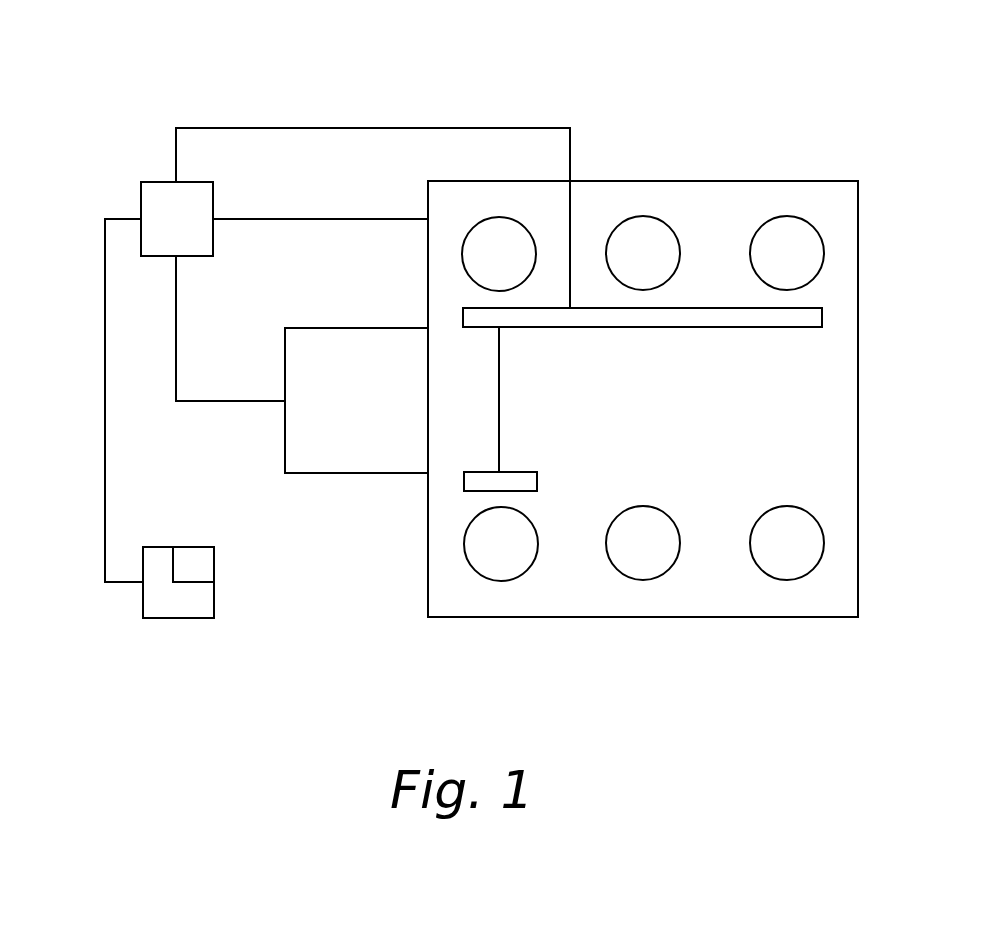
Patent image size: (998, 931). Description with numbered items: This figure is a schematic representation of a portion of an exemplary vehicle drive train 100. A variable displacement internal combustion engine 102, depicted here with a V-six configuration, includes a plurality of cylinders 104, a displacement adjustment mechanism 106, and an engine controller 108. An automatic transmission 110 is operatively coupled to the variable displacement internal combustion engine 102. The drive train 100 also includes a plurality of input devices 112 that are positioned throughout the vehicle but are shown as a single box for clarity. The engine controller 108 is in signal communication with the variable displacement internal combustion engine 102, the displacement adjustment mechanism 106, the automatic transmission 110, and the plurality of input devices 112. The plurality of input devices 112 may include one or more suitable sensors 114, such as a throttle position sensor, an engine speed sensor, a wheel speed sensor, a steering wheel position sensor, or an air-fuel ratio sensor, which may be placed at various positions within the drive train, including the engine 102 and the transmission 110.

The vehicle drive train 100 is at (764, 98).
The variable displacement internal combustion engine 102 is at (850, 425).
The cylinders 104 is at (515, 268).
The displacement adjustment mechanism 106 is at (535, 322).
The engine controller 108 is at (152, 202).
The automatic transmission 110 is at (333, 459).
The input devices 112 is at (170, 602).
The sensors 114 is at (204, 574).